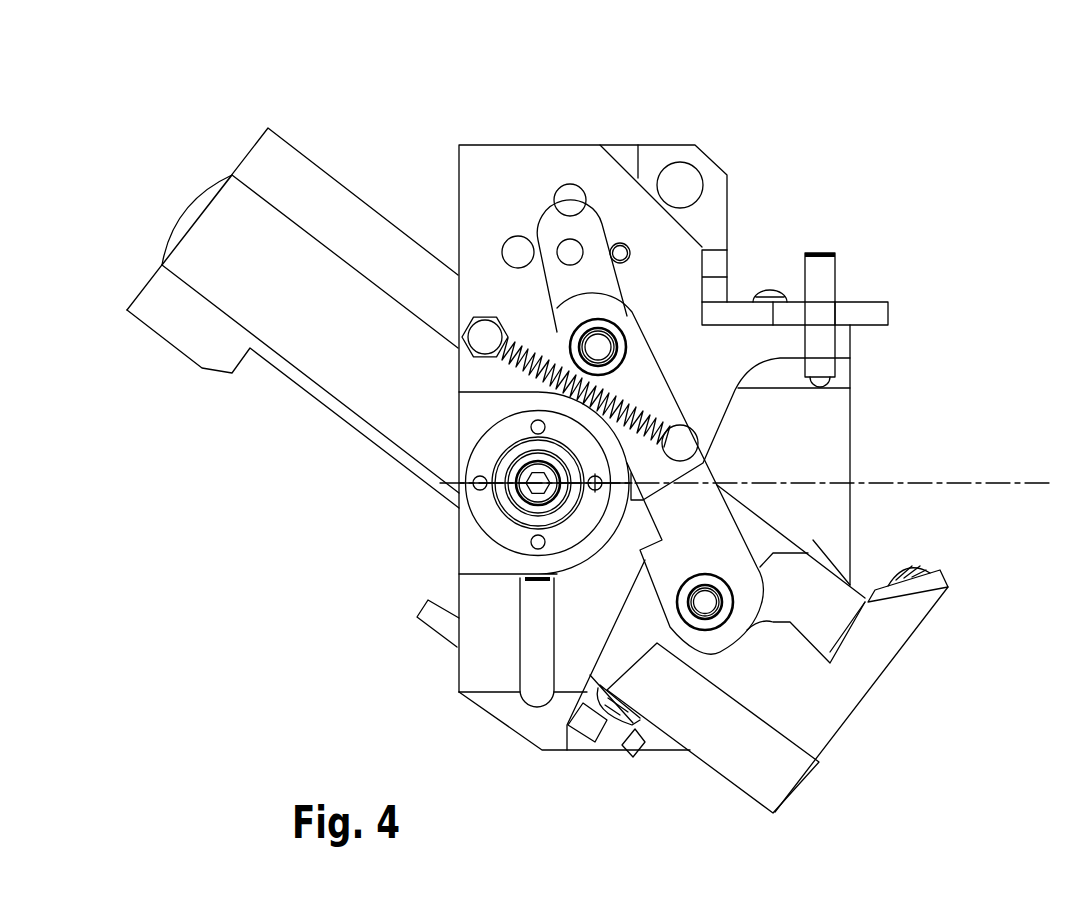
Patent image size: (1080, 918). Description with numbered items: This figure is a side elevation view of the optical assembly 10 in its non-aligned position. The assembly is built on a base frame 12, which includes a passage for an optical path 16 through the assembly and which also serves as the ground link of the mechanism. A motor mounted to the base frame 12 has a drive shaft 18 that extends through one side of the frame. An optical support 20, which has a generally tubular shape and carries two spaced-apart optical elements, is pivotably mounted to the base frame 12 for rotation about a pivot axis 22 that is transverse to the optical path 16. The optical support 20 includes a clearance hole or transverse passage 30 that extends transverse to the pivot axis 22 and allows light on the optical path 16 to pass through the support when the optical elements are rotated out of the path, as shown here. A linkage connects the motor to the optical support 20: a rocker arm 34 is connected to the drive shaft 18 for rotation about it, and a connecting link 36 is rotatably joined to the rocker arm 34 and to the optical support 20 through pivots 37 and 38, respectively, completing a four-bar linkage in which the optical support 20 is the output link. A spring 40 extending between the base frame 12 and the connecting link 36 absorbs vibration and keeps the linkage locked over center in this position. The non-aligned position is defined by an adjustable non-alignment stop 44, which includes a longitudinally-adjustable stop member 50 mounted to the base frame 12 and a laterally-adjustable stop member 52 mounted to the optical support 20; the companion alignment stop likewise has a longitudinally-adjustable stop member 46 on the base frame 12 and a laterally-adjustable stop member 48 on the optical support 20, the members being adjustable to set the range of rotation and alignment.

The optical assembly 10 is at (234, 110).
The base frame 12 is at (482, 147).
The optical path 16 is at (1028, 490).
The drive shaft 18 is at (568, 250).
The optical support 20 is at (300, 178).
The pivot axis 22 is at (526, 491).
The transverse passage 30 is at (348, 520).
The rocker arm 34 is at (566, 217).
The connecting link 36 is at (711, 497).
The pivot 37 is at (600, 347).
The pivot 38 is at (710, 605).
The spring 40 is at (512, 362).
The non-alignment stop 44 is at (766, 718).
The longitudinally-adjustable stop member 46 is at (870, 312).
The laterally-adjustable stop member 48 is at (943, 590).
The longitudinally-adjustable stop member 50 is at (582, 735).
The laterally-adjustable stop member 52 is at (636, 758).